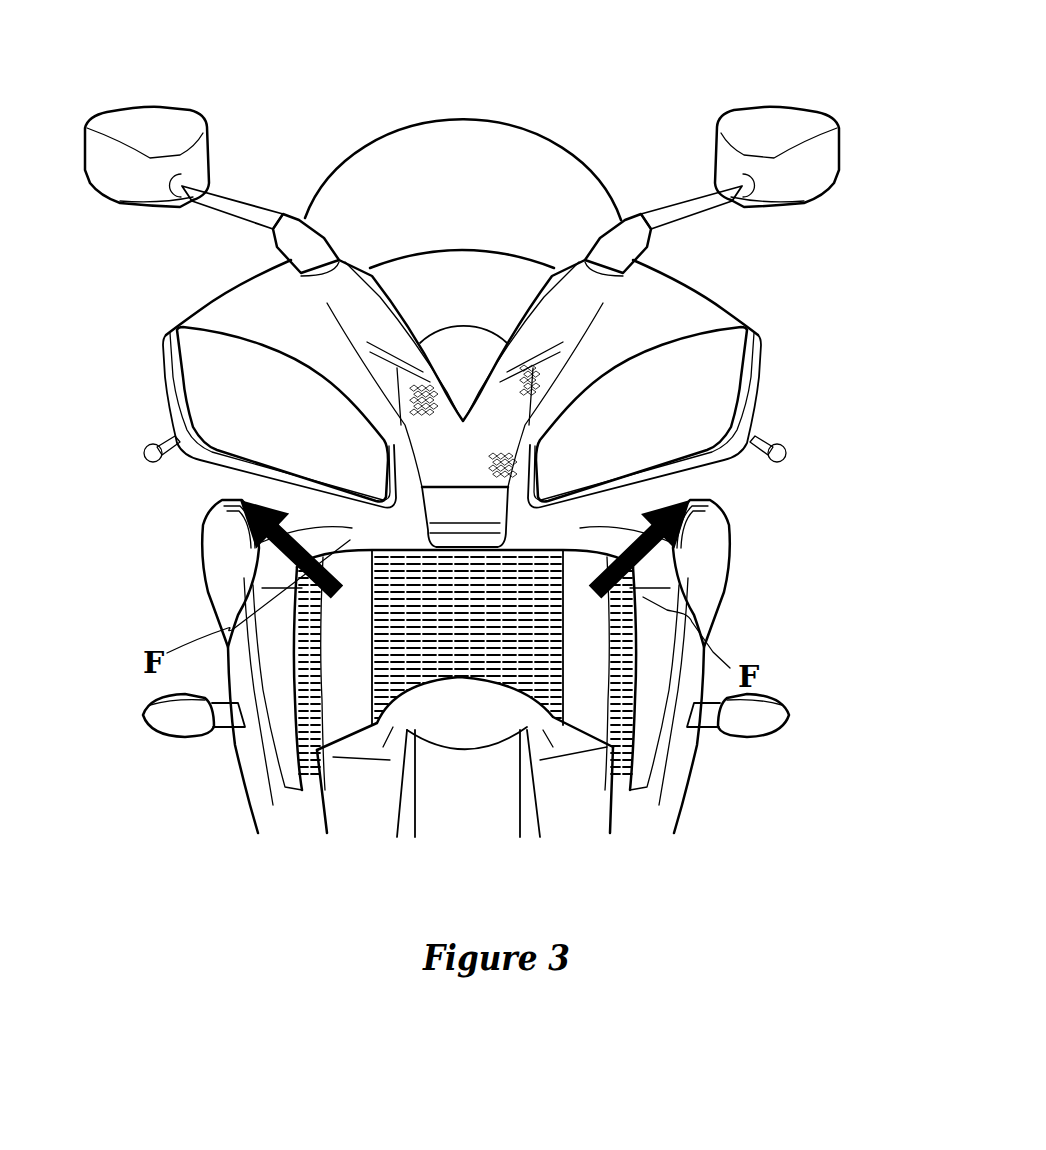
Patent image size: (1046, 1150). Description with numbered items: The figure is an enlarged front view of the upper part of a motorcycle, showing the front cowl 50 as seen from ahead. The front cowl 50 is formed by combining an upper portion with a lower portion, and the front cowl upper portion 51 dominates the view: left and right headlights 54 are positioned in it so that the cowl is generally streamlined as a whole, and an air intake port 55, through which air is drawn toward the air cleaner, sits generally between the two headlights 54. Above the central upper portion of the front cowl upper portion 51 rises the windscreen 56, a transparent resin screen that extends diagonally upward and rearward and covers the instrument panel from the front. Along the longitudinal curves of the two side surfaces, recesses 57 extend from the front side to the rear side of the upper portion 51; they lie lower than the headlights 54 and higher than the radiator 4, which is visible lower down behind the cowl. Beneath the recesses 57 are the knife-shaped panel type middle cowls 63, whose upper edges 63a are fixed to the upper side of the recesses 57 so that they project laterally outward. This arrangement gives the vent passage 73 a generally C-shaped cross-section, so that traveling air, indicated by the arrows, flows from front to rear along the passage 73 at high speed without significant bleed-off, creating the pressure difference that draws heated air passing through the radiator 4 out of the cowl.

The radiator 4 is at (465, 764).
The front cowl 50 is at (549, 646).
The front cowl upper portion 51 is at (494, 284).
The headlights 54 is at (452, 414).
The air intake port 55 is at (465, 398).
The windscreen 56 is at (463, 112).
The recesses 57 is at (462, 423).
The middle cowls 63 is at (441, 666).
The upper edges of the middle cowls 63a is at (447, 566).
The vent passage 73 is at (455, 524).